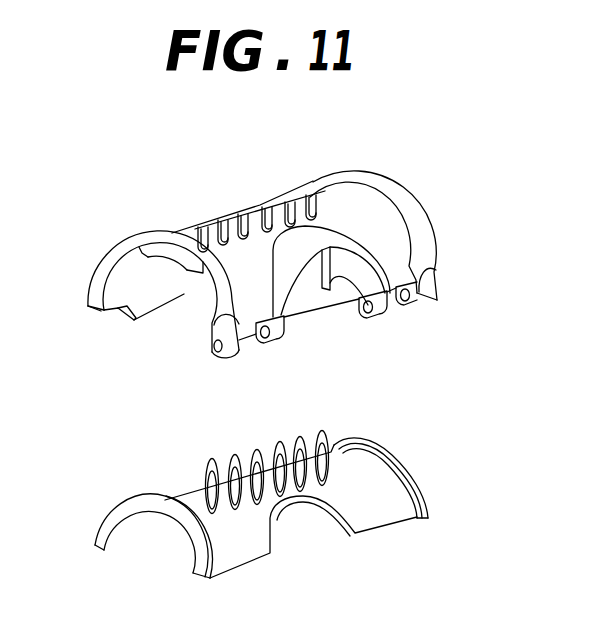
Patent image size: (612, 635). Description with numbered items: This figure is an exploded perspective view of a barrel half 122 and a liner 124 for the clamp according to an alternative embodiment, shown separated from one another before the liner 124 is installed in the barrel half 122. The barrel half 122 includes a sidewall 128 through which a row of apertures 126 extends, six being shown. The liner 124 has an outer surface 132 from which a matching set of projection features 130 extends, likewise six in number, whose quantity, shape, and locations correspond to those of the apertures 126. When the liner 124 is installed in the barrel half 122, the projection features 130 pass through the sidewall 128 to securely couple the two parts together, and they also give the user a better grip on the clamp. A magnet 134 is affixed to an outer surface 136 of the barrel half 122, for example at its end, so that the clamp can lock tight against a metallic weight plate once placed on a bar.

The barrel half 122 is at (289, 247).
The liner 124 is at (333, 488).
The aperture 126 is at (290, 204).
The sidewall 128 is at (390, 245).
The projection feature 130 is at (236, 456).
The outer surface 132 is at (400, 498).
The magnet 134 is at (142, 236).
The outer surface 136 is at (101, 268).